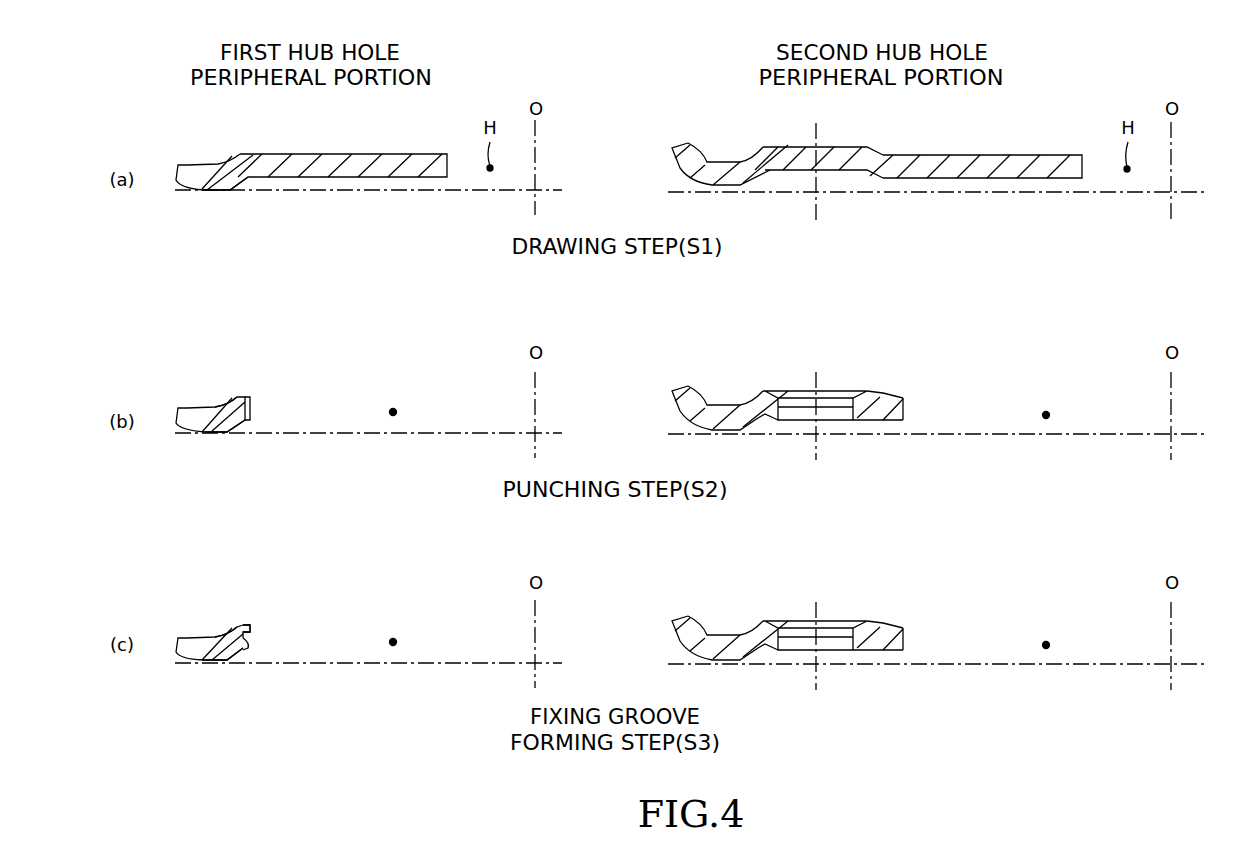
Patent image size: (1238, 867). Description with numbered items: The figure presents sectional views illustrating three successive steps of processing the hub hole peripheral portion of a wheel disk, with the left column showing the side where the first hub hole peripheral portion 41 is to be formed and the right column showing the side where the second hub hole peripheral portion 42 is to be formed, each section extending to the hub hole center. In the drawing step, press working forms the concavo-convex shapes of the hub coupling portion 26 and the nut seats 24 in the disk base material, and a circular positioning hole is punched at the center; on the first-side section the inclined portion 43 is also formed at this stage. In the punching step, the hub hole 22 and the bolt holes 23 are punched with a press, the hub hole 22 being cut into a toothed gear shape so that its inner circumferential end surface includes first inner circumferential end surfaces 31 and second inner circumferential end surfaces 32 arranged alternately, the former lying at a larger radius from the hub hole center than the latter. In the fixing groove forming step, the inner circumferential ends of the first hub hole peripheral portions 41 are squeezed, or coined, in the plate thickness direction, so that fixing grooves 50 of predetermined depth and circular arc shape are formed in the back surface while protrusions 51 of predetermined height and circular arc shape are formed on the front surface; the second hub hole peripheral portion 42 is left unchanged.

The hub hole 22 is at (393, 410).
The bolt hole 23 is at (848, 390).
The nut seat 24 is at (790, 146).
The hub coupling portion 26 is at (190, 165).
The first inner circumferential end surface 31 is at (250, 408).
The second inner circumferential end surface 32 is at (903, 408).
The first hub hole peripheral portion 41 is at (220, 398).
The second hub hole peripheral portion 42 is at (878, 396).
The inclined portion 43 is at (228, 190).
The fixing groove 50 is at (248, 641).
The protrusion 51 is at (246, 624).